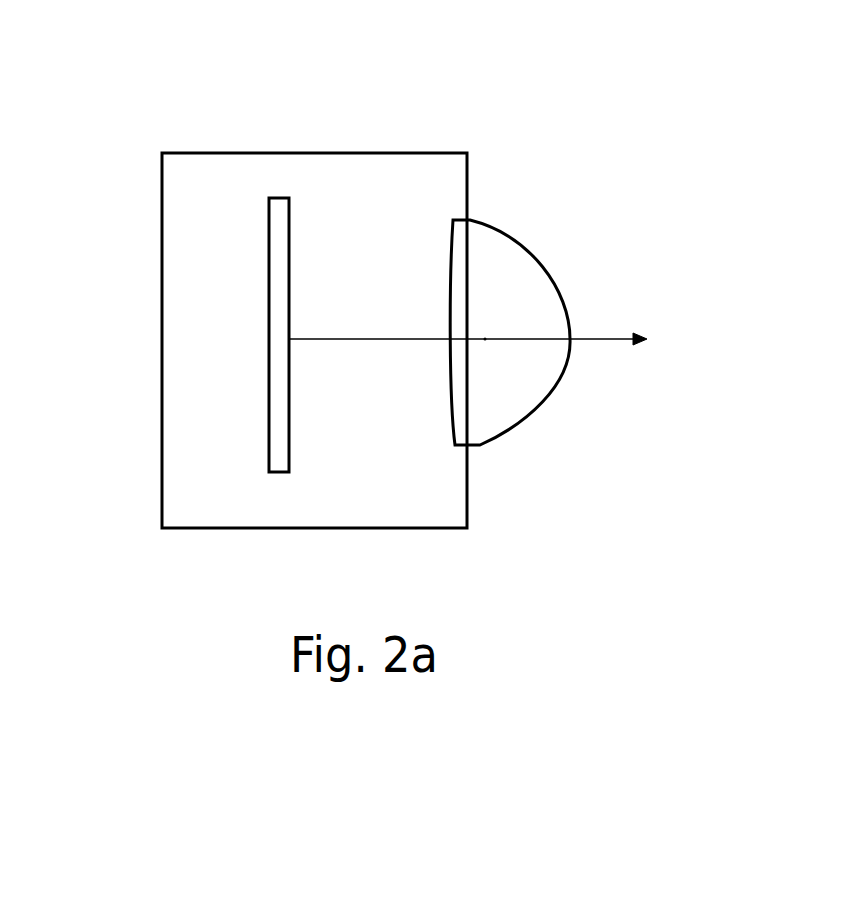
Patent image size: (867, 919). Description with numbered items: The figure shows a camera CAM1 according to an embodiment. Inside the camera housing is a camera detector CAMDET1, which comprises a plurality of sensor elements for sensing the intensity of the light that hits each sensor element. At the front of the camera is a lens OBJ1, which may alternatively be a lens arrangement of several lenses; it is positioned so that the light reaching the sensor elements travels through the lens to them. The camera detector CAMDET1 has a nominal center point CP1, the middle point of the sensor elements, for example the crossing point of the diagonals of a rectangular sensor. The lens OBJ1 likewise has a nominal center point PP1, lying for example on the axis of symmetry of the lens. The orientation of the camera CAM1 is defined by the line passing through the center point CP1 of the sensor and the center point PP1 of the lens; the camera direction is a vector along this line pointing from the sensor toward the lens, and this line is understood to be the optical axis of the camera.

The camera CAM1 is at (242, 47).
The camera detector CAMDET1 is at (278, 194).
The lens OBJ1 is at (480, 446).
The nominal center point of the camera detector CP1 is at (289, 339).
The nominal center point of the lens PP1 is at (485, 339).